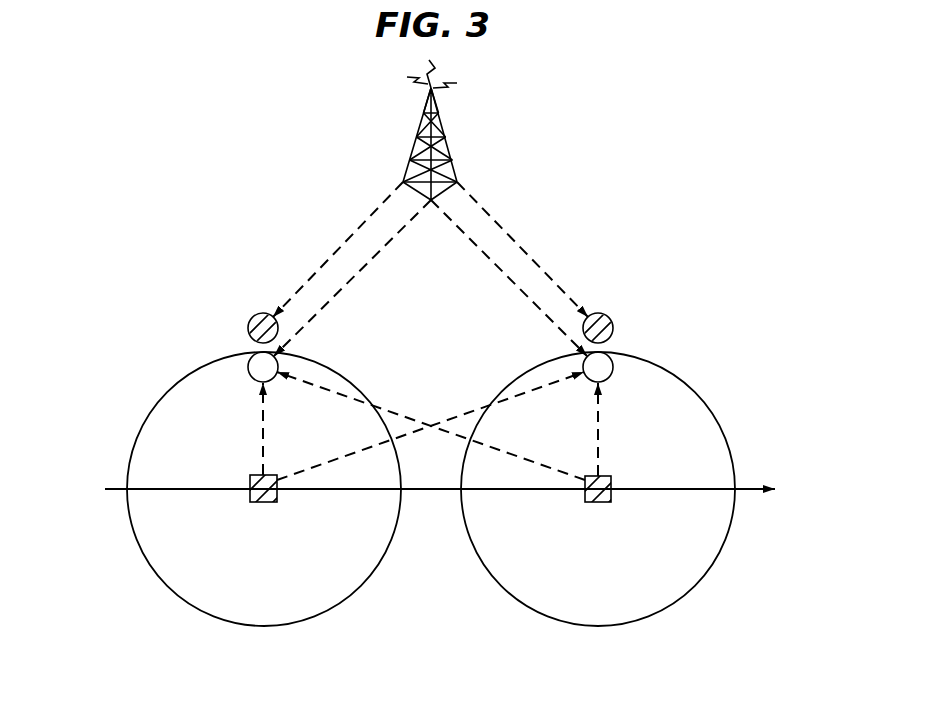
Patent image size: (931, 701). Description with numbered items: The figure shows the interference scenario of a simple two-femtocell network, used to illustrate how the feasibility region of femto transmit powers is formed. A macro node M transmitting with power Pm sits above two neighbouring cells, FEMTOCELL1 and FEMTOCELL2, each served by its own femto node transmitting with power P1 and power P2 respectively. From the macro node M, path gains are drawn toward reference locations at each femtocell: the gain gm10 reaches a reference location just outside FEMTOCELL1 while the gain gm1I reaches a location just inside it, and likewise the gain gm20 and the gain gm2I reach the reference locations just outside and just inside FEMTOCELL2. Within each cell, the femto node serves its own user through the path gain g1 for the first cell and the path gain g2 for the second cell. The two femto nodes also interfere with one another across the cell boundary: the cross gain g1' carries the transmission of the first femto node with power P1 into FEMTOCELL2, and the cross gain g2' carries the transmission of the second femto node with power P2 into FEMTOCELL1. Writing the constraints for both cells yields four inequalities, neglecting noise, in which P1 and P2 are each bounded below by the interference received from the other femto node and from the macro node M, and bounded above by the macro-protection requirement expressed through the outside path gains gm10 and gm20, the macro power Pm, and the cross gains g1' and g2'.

The macro base station transmit power Pm is at (433, 130).
The macro node M is at (447, 130).
The path gain from macro to reference location outside femtocell 1 gm10 is at (338, 249).
The path gain from macro to reference location inside femtocell 1 gm1I is at (352, 278).
The path gain from macro to reference location outside femtocell 2 gm20 is at (522, 249).
The path gain from macro to reference location inside femtocell 2 gm2I is at (509, 278).
The femtocell 1 FEMTOCELL1 is at (264, 507).
The femtocell 2 FEMTOCELL2 is at (598, 507).
The femto node 1 transmit power P1 is at (267, 500).
The femto node 2 transmit power P2 is at (602, 501).
The path gain of femto node 1 to its own cell g1 is at (252, 429).
The path gain of femto node 2 to its own cell g2 is at (611, 429).
The interference path gain from femto node 1 to femtocell 2 g1' is at (430, 426).
The interference path gain from femto node 2 to femtocell 1 g2' is at (431, 426).